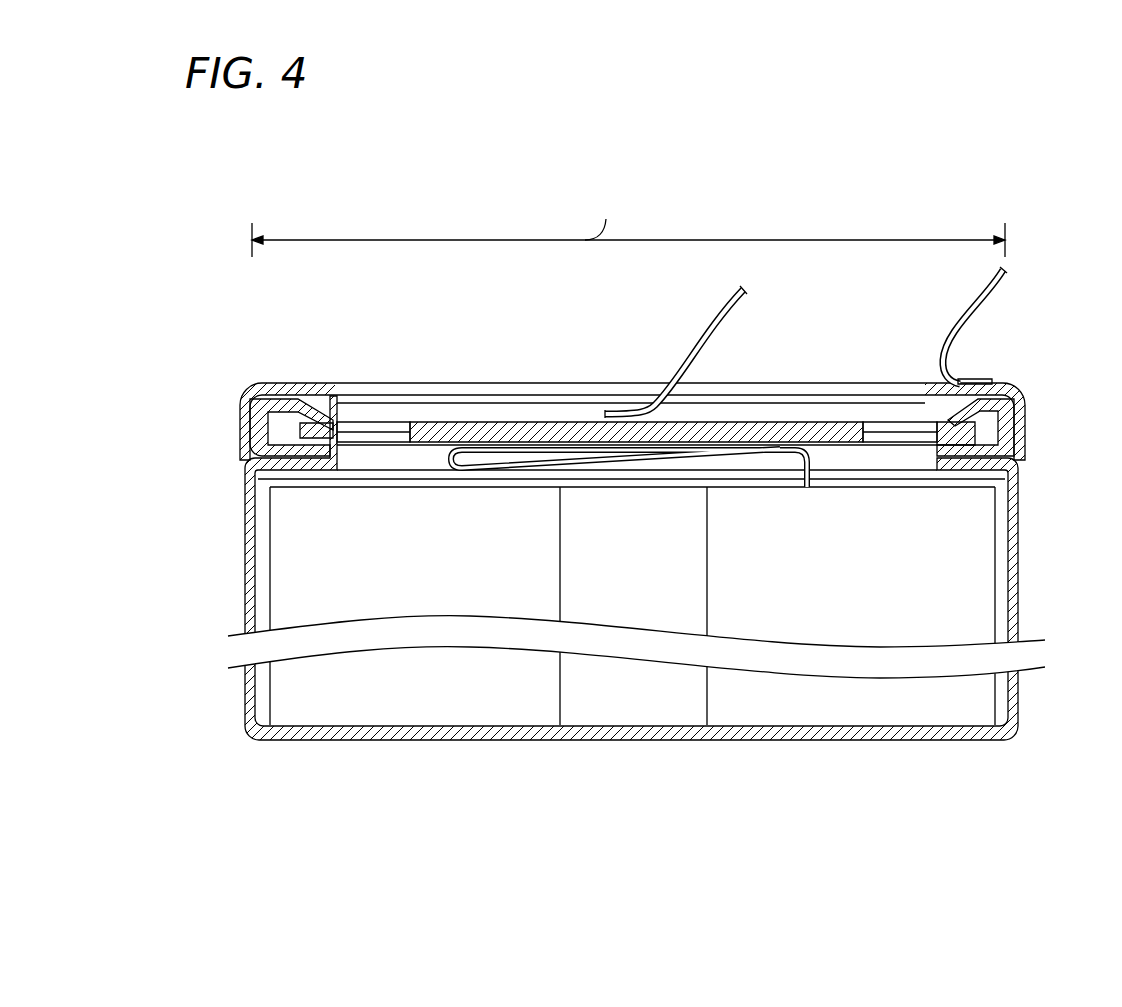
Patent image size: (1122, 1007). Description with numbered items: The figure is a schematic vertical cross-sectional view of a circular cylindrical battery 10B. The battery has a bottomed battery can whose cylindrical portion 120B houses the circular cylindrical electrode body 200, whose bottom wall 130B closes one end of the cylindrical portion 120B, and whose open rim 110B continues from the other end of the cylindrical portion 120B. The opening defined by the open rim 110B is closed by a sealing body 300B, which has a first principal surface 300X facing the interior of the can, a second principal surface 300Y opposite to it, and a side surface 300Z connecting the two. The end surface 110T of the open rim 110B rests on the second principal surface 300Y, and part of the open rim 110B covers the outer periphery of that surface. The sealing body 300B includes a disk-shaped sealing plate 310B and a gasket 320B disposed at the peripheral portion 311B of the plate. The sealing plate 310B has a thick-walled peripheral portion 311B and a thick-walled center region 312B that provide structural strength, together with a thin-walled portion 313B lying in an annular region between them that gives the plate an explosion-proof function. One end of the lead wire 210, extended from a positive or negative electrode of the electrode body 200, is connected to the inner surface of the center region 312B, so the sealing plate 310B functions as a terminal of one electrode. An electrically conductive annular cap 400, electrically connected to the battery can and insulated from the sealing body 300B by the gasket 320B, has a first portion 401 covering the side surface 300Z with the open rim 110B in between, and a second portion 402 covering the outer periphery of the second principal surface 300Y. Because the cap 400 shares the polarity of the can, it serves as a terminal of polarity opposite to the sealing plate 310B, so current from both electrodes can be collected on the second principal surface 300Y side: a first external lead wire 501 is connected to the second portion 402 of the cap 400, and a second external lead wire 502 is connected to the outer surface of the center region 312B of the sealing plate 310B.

The battery 10B is at (599, 173).
The open rim 110B is at (1047, 380).
The end surface 110T is at (925, 397).
The cylindrical portion 120B is at (1047, 793).
The bottom wall 130B is at (733, 740).
The electrode body 200 is at (297, 577).
The lead wire 210 is at (712, 452).
The sealing body 300B is at (495, 290).
The sealing plate 310B is at (577, 330).
The peripheral portion 311B is at (370, 410).
The center region 312B is at (520, 410).
The thin-walled portion 313B is at (432, 410).
The gasket 320B is at (266, 397).
The first principal surface 300X is at (834, 446).
The second principal surface 300Y is at (832, 422).
The side surface 300Z is at (272, 427).
The cap 400 is at (1060, 332).
The first portion 401 is at (1020, 422).
The second portion 402 is at (956, 379).
The first external lead wire 501 is at (979, 298).
The second external lead wire 502 is at (713, 307).